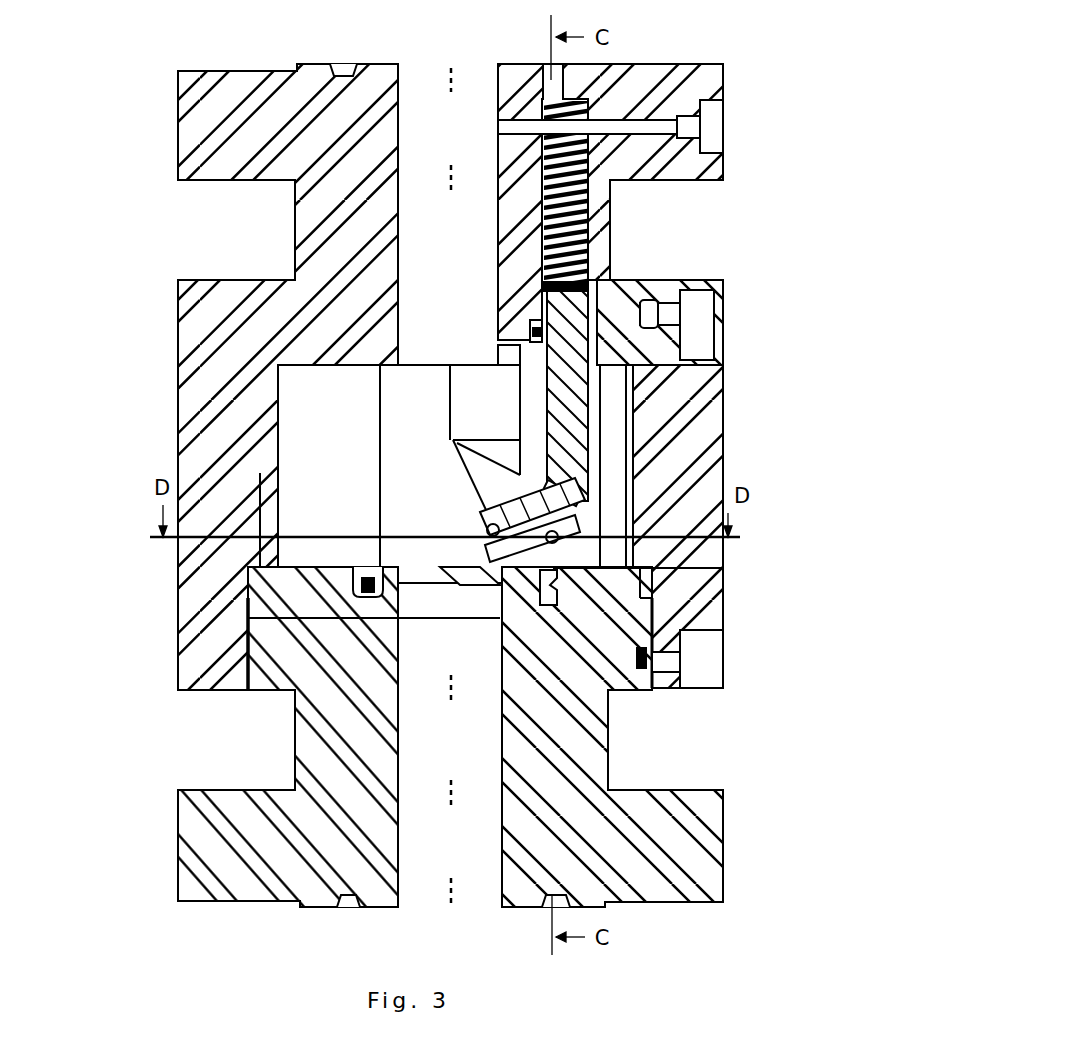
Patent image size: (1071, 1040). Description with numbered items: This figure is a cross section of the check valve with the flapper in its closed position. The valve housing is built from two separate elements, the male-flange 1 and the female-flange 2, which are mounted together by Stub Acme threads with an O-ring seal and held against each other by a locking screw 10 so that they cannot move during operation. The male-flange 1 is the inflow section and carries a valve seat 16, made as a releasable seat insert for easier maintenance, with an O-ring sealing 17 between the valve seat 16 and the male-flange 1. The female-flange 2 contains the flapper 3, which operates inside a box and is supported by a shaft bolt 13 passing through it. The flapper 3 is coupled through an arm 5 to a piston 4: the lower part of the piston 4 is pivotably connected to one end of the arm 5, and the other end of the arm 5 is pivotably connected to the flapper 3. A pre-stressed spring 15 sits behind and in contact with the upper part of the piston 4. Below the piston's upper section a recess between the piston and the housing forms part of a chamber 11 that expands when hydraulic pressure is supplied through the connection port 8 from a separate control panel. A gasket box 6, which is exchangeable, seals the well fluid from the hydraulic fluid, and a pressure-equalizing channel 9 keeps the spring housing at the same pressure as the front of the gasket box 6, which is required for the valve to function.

The male-flange 1 is at (225, 845).
The female-flange 2 is at (235, 137).
The flapper 3 is at (480, 567).
The piston 4 is at (566, 398).
The arm 5 is at (576, 510).
The gasket box 6 is at (530, 340).
The connection point/port 8 is at (667, 312).
The pressure-equalizing channel 9 is at (718, 126).
The locking screw 10 is at (700, 659).
The chamber 11 is at (598, 305).
The shaft bolt 13 is at (563, 540).
The pre-stressed spring 15 is at (592, 207).
The valve seat 16 is at (355, 606).
The O-ring sealing 17 is at (557, 590).